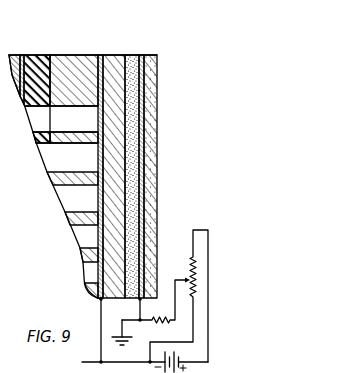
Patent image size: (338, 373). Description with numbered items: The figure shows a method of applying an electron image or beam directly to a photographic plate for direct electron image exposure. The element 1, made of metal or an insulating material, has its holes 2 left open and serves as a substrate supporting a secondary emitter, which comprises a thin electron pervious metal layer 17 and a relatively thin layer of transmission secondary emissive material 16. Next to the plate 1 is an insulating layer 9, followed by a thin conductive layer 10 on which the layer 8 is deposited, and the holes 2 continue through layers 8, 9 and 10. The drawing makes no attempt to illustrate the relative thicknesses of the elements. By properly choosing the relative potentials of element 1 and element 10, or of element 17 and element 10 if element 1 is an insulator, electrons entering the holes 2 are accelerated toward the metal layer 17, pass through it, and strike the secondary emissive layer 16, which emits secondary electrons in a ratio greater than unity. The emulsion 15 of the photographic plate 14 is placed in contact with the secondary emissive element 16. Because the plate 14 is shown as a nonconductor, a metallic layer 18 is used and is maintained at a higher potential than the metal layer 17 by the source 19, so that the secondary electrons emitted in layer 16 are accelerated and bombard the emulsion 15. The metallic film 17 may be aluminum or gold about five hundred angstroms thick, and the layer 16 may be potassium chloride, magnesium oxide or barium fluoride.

The phosphor carrier metallic plate 1 is at (75, 54).
The passageways 2 is at (62, 160).
The layer 8 is at (13, 54).
The insulating layer 9 is at (42, 54).
The thin conductive layer 10 is at (21, 54).
The photographic plate 14 is at (158, 85).
The emulsion 15 is at (133, 54).
The transmission secondary emissive material layer 16 is at (115, 54).
The thin electron pervious metal layer 17 is at (99, 54).
The metallic layer 18 is at (143, 123).
The source 19 is at (180, 361).